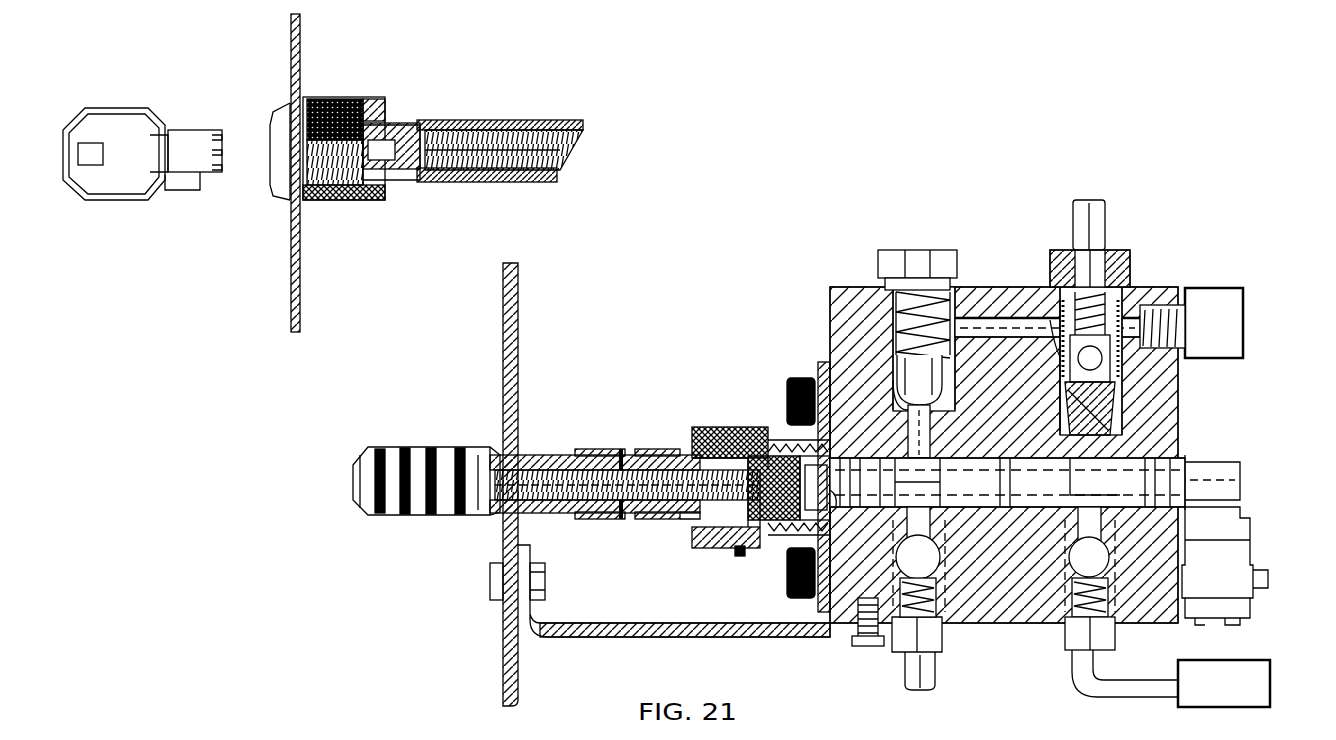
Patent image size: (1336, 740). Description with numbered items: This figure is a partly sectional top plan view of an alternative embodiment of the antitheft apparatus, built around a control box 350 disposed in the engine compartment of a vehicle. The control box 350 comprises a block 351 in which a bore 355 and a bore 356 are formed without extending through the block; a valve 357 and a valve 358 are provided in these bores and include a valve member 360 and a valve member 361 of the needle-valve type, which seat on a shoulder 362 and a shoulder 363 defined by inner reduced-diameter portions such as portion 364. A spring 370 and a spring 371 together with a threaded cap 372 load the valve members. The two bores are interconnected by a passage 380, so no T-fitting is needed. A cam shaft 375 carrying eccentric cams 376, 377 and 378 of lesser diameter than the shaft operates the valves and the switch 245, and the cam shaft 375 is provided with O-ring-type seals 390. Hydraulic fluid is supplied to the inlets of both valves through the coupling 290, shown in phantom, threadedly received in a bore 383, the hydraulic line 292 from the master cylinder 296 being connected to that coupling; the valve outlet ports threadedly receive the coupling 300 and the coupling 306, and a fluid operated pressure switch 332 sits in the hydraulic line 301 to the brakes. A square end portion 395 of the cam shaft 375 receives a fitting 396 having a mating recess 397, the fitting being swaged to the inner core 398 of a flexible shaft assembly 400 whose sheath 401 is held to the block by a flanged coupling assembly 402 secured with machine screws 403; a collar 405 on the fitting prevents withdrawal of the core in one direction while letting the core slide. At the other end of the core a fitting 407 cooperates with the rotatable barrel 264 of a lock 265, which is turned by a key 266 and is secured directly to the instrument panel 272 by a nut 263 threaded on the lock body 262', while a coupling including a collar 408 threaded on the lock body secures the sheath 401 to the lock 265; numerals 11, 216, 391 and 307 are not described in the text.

The key 266 is at (138, 88).
The instrument panel 272 is at (306, 42).
The nut 263 is at (320, 96).
The lock 265 is at (283, 165).
The body of the lock 262' is at (344, 177).
The rotatable barrel 264 is at (394, 193).
The fitting 407 is at (400, 125).
The collar 408 is at (387, 192).
The panel 11 is at (507, 305).
The sheath 401 is at (526, 456).
The flexible shaft assembly 400 is at (610, 432).
The inner core 398 is at (662, 438).
The collar 405 is at (662, 515).
The flanged coupling assembly 402 is at (782, 440).
The fitting 396 is at (779, 441).
The mating recess 397 is at (776, 520).
The square end portion 395 is at (775, 531).
The machine screws 403 is at (817, 368).
The control box 350 is at (822, 280).
The valve body 216 is at (891, 322).
The valve 358 is at (890, 374).
The bore 356 is at (898, 423).
The threaded cap 372 is at (913, 236).
The spring 370 is at (953, 305).
The passage 380 is at (1000, 318).
The valve member 361 is at (950, 395).
The shoulder 362 is at (935, 410).
The bore 355 is at (1066, 412).
The hydraulic line 301 is at (1100, 222).
The spring 371 is at (1120, 259).
The fluid operated pressure switch 332 is at (1206, 300).
The coupling 300 is at (1100, 390).
The valve member 360 is at (1185, 396).
The valve 357 is at (1100, 402).
The shoulder 363 is at (1100, 422).
The collar 391 is at (1198, 474).
The eccentric cam 378 is at (1240, 482).
The switch 245 is at (1245, 540).
The cam shaft 375 is at (875, 482).
The inner portion of reduced diameter 364 is at (930, 455).
The eccentric cam 376 is at (1060, 482).
The O-ring-type seals 390 is at (872, 505).
The eccentric cam 377 is at (948, 567).
The coupling 306 is at (890, 545).
The fitting 307 is at (902, 672).
The block 351 is at (1022, 611).
The bore 383 is at (1066, 634).
The coupling 290 is at (1112, 575).
The hydraulic line 292 is at (1072, 668).
The master cylinder 296 is at (1225, 697).